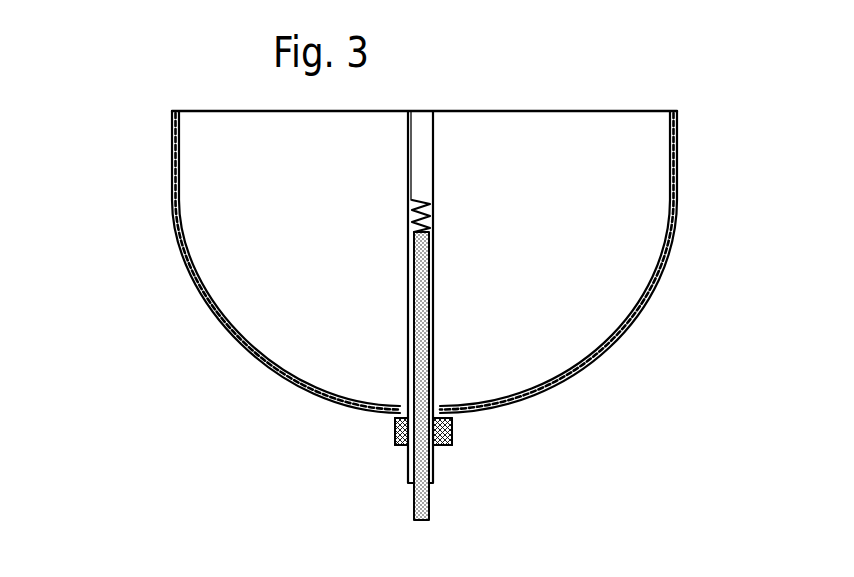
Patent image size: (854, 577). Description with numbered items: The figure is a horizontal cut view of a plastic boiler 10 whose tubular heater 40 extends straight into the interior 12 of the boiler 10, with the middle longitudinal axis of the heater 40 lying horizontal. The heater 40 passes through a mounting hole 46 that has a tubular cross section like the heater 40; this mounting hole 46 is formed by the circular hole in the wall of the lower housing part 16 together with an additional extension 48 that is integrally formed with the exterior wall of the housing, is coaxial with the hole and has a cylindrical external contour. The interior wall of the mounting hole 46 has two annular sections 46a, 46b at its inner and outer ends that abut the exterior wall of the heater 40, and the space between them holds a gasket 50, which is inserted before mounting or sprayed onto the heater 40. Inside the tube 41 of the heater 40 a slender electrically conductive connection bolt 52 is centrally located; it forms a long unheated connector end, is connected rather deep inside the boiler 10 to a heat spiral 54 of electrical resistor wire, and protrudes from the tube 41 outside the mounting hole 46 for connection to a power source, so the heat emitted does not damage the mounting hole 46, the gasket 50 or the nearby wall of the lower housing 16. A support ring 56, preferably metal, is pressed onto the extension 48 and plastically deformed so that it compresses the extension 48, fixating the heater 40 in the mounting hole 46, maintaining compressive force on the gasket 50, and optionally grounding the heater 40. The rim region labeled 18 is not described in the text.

The boiler 10 is at (142, 195).
The interior 12 is at (679, 192).
The lower housing part 16 is at (561, 176).
The upper rim 18 is at (675, 111).
The tubular heater 40 is at (434, 130).
The tube 41 is at (434, 259).
The mounting hole 46 is at (437, 417).
The annular section 46a is at (404, 418).
The annular section 46b is at (402, 447).
The extension 48 is at (394, 432).
The gasket 50 is at (441, 446).
The connection bolt 52 is at (412, 308).
The heat spiral 54 is at (409, 208).
The support ring 56 is at (453, 432).